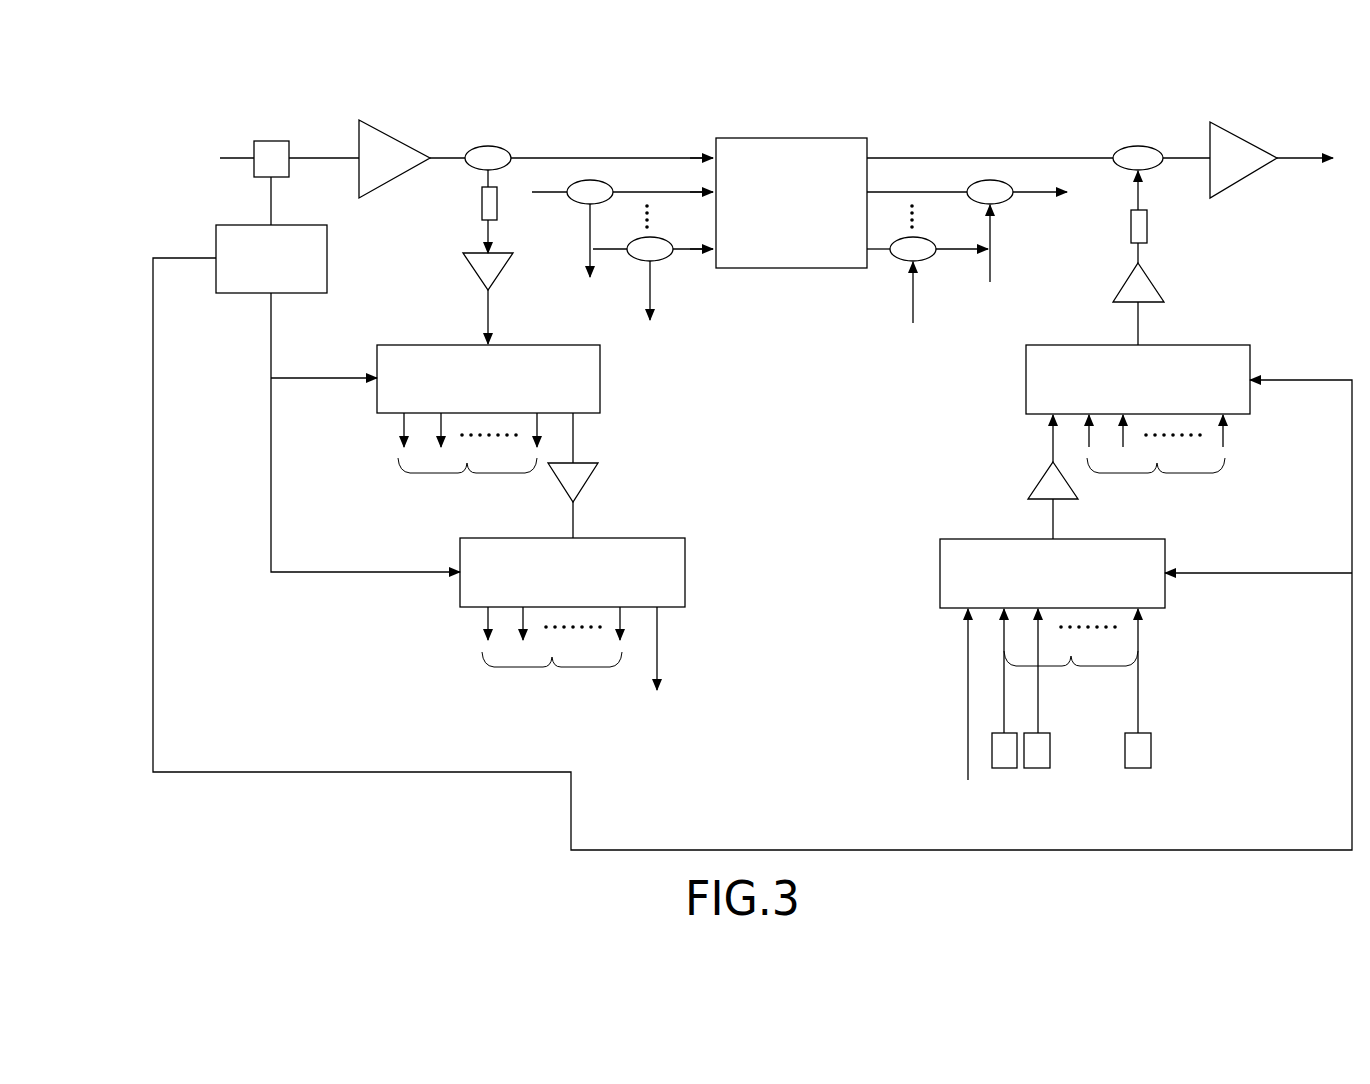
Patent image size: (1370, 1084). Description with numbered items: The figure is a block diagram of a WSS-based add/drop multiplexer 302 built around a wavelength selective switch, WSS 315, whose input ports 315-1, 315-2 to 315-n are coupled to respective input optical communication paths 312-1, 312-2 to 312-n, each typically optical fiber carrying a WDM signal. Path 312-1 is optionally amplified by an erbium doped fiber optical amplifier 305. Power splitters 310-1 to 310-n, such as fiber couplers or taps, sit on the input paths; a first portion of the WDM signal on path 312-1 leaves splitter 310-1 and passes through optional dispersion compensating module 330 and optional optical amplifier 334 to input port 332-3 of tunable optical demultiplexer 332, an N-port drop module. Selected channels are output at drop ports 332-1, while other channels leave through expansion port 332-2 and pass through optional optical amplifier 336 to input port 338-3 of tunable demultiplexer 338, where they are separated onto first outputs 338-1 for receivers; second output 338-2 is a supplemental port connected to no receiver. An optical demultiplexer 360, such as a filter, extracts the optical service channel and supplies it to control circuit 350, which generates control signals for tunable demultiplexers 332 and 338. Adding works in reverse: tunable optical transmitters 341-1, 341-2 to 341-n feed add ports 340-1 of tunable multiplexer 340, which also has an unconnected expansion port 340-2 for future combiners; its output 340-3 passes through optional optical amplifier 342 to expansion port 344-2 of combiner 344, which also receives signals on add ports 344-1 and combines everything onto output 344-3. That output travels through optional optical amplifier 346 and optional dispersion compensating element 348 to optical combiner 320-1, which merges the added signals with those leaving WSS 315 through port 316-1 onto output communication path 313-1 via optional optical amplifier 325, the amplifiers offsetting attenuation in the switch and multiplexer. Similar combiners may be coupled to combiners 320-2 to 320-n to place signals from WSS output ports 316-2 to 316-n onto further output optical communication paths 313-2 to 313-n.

The WSS-based add/drop multiplexer 302 is at (502, 812).
The optical amplifier 305 is at (380, 125).
The power splitter 310-1 is at (476, 147).
The power splitter 310-n is at (662, 262).
The input optical communication path 312-1 is at (624, 157).
The input optical communication path 312-2 is at (548, 191).
The input optical communication path 312-n is at (608, 252).
The WSS 315 is at (760, 138).
The input port 315-1 is at (699, 158).
The input port 315-2 is at (703, 251).
The input port 315-n is at (700, 196).
The port 316-1 is at (870, 158).
The WSS output port 316-2 is at (875, 192).
The WSS output port 316-n is at (870, 252).
The output communication path 313-1 is at (1055, 158).
The output optical communication path 313-2 is at (925, 192).
The output optical communication path 313-n is at (950, 252).
The optical combiner 320-1 is at (1153, 148).
The combiner 320-2 is at (1000, 204).
The combiner 320-n is at (918, 262).
The optical amplifier 325 is at (1258, 135).
The dispersion compensating module 330 is at (481, 228).
The tunable optical demultiplexer 332 is at (377, 360).
The outputs 332-1 is at (404, 473).
The expansion port 332-2 is at (574, 425).
The input port 332-3 is at (486, 333).
The optical amplifier 334 is at (476, 280).
The optical amplifier 336 is at (585, 488).
The tunable demultiplexer 338 is at (460, 590).
The first outputs 338-1 is at (486, 668).
The second output 338-2 is at (658, 620).
The input port 338-3 is at (572, 523).
The tunable multiplexer 340 is at (1165, 593).
The add ports 340-1 is at (1139, 662).
The expansion port 340-2 is at (967, 742).
The output 340-3 is at (1054, 523).
The tunable optical transmitter 341-1 is at (1014, 768).
The tunable optical transmitter 341-2 is at (1051, 752).
The tunable optical transmitter 341-n is at (1151, 753).
The optical amplifier 342 is at (1038, 490).
The combiner 344 is at (1250, 403).
The add ports 344-1 is at (1222, 466).
The expansion port 344-2 is at (1052, 427).
The output 344-3 is at (1139, 330).
The optical amplifier 346 is at (1155, 288).
The dispersion compensating element 348 is at (1148, 243).
The control circuit 350 is at (216, 243).
The optical demultiplexer 360 is at (268, 141).